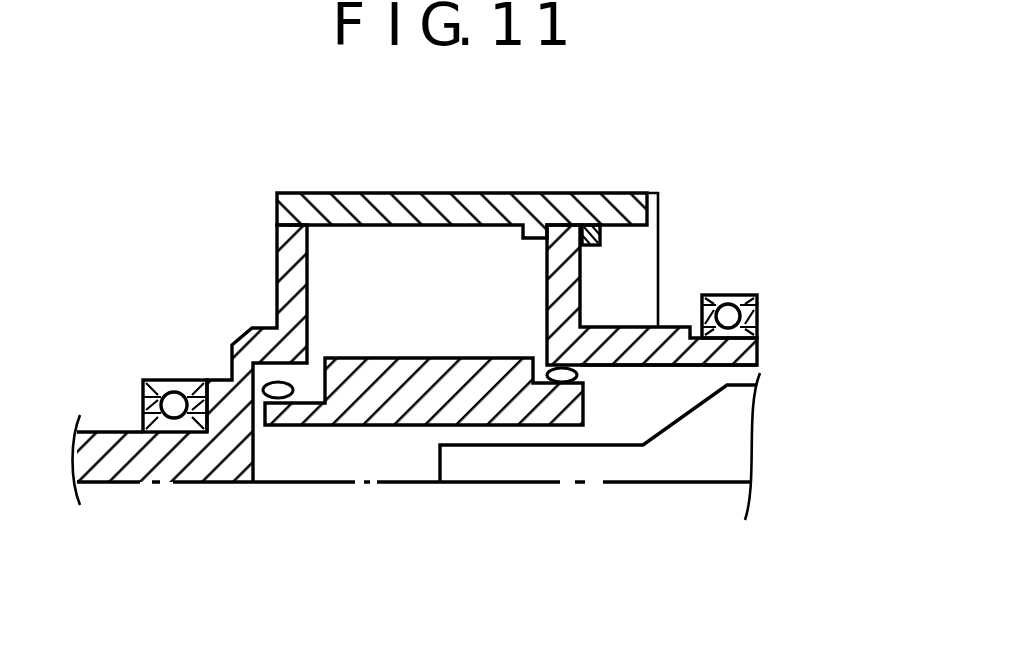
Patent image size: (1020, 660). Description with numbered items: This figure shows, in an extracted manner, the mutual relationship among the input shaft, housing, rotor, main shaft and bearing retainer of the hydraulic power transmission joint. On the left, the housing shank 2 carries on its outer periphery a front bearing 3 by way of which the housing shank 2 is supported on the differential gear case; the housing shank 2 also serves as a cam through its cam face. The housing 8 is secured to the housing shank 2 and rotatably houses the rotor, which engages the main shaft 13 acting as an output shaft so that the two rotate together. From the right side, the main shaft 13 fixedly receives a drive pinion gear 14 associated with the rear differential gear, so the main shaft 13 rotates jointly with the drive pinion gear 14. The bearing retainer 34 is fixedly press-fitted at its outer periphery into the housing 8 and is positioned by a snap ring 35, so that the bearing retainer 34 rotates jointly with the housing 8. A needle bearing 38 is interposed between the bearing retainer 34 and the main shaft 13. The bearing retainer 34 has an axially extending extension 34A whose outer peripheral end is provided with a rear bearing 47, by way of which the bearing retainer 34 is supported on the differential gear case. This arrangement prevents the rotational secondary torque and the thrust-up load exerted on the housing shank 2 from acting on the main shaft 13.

The housing shank 2 is at (208, 455).
The front bearing 3 is at (170, 390).
The housing 8 is at (448, 205).
The main shaft 13 is at (393, 408).
The drive pinion gear 14 is at (620, 463).
The bearing retainer 34 is at (572, 292).
The extension 34A is at (670, 360).
The snap ring 35 is at (600, 238).
The needle bearing 38 is at (577, 372).
The rear bearing 47 is at (752, 293).